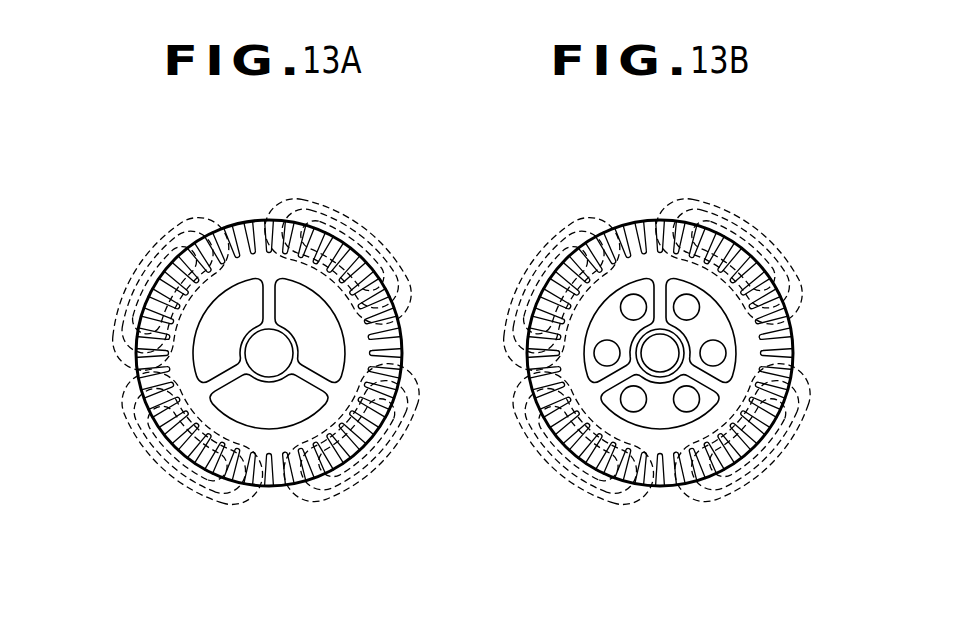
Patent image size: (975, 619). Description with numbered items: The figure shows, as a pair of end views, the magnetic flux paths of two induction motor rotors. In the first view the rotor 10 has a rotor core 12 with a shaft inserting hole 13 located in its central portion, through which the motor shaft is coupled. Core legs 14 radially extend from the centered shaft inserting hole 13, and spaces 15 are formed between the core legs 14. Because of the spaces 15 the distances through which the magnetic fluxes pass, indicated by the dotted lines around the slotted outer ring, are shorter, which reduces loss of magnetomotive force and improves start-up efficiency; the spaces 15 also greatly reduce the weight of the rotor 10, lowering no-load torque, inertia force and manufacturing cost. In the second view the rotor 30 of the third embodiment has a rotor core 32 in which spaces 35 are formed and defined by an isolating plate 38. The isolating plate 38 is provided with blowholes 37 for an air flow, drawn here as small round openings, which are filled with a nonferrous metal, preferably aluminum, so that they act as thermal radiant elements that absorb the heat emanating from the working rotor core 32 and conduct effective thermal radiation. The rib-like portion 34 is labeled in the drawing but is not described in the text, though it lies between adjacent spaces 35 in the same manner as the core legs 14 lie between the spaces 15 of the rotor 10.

In FIG. 13A, the rotor 10 is at (378, 220).
In FIG. 13A, the rotor core 12 is at (366, 356).
In FIG. 13A, the shaft inserting hole 13 is at (262, 358).
In FIG. 13A, the core legs 14 is at (317, 380).
In FIG. 13A, the spaces 15 is at (262, 418).
In FIG. 13B, the rotor 30 is at (768, 220).
In FIG. 13B, the rotor core 32 is at (760, 345).
In FIG. 13B, the rib 34 is at (607, 380).
In FIG. 13B, the spaces 35 is at (665, 415).
In FIG. 13B, the blowholes 37 is at (635, 405).
In FIG. 13B, the isolating plate 38 is at (710, 400).